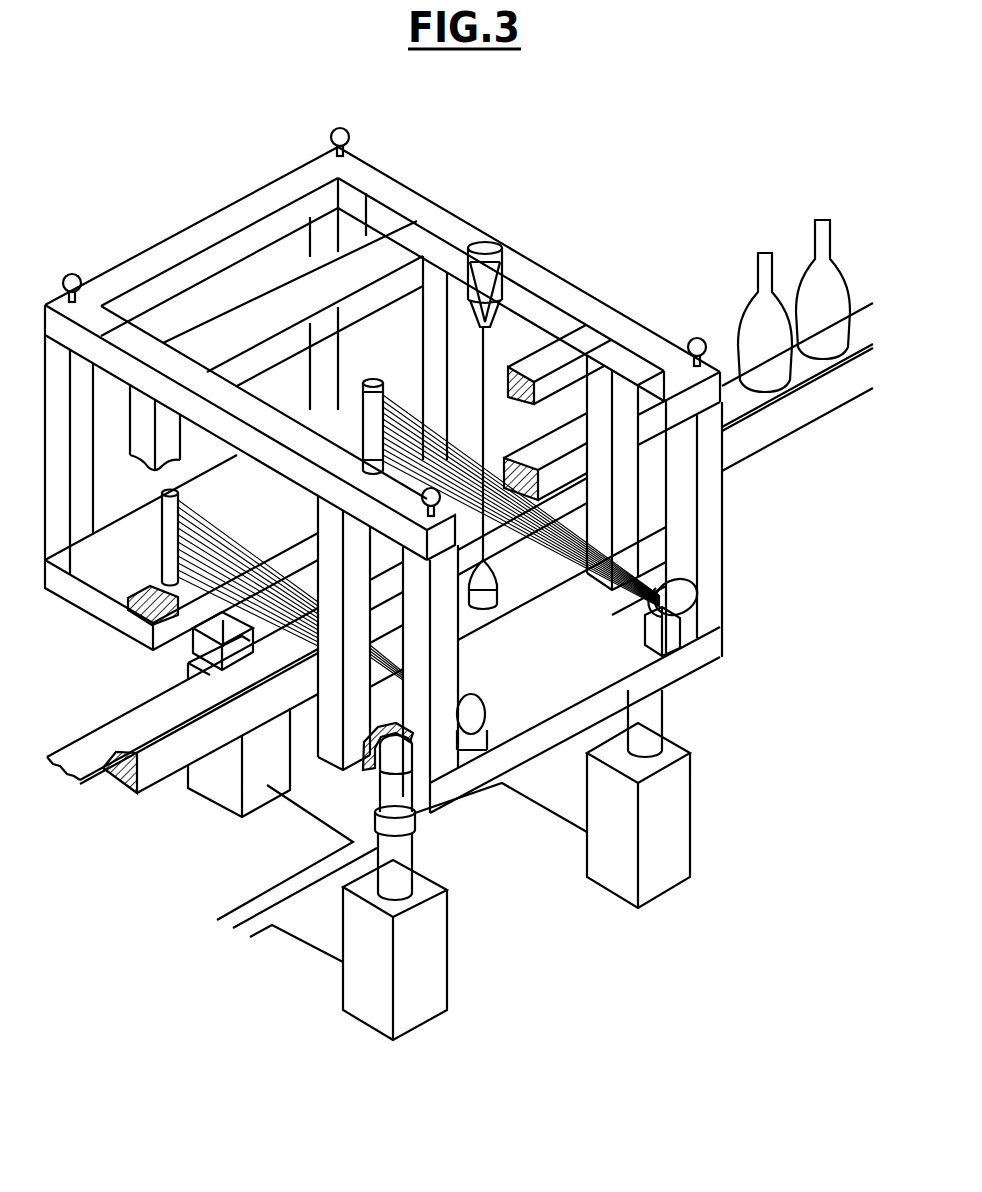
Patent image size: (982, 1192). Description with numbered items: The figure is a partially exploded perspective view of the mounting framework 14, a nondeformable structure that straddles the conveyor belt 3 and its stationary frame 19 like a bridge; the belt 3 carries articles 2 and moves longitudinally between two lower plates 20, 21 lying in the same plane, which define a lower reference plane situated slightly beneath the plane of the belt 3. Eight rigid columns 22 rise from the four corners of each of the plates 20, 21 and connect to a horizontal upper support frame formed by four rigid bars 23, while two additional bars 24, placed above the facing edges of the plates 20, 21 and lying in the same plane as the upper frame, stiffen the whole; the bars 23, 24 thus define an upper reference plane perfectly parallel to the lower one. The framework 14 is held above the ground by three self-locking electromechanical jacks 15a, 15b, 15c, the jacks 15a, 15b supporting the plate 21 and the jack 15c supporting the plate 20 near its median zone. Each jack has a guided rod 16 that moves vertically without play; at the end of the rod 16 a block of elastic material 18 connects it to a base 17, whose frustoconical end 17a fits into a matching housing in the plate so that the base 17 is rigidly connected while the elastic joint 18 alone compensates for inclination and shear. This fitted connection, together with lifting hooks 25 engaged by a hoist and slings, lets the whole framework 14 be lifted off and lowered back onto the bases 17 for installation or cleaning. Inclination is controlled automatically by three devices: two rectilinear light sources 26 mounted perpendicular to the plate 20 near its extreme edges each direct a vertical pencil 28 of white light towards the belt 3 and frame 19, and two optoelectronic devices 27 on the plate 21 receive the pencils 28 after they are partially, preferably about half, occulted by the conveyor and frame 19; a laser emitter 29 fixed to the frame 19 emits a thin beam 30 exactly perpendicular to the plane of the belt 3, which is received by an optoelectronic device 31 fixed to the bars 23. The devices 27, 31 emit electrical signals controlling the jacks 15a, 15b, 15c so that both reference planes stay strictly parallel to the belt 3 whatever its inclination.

The bottles 2 is at (812, 272).
The conveyor belt 3 is at (860, 308).
The mounting framework 14 is at (262, 163).
The jack 15a is at (420, 985).
The jack 15b is at (663, 820).
The jack 15c is at (223, 783).
The rod 16 is at (397, 870).
The base 17 is at (393, 795).
The end of support base 17a is at (400, 762).
The block of elastic material 18 is at (415, 815).
The stationary frame 19 is at (805, 410).
The lower plate 20 is at (113, 580).
The lower plate 21 is at (583, 653).
The column 22 is at (77, 504).
The bar 23 is at (100, 320).
The additional bar 24 is at (385, 230).
The lifting hook 25 is at (72, 274).
The rectilinear light source 26 is at (375, 383).
The optoelectronic device 27 is at (680, 603).
The light pencil 28 is at (455, 452).
The laser emitter 29 is at (486, 614).
The laser beam 30 is at (485, 439).
The optoelectronic device 31 is at (507, 266).